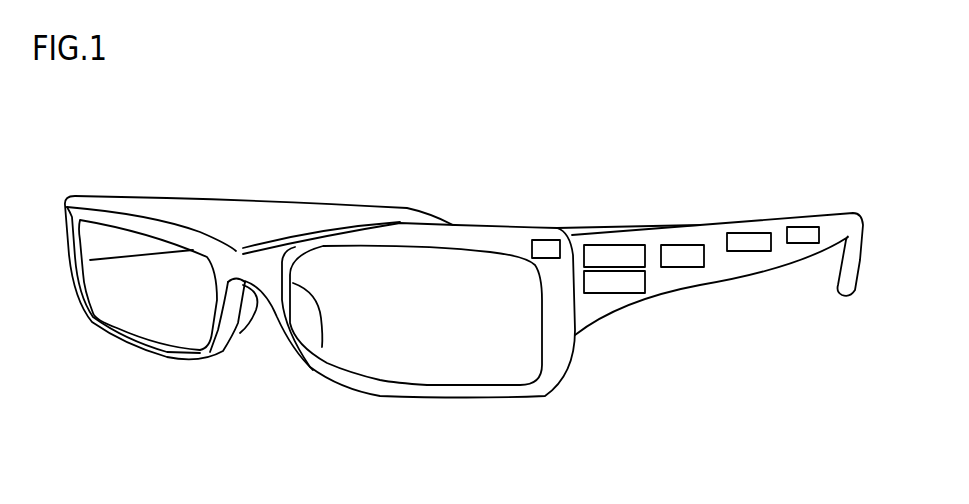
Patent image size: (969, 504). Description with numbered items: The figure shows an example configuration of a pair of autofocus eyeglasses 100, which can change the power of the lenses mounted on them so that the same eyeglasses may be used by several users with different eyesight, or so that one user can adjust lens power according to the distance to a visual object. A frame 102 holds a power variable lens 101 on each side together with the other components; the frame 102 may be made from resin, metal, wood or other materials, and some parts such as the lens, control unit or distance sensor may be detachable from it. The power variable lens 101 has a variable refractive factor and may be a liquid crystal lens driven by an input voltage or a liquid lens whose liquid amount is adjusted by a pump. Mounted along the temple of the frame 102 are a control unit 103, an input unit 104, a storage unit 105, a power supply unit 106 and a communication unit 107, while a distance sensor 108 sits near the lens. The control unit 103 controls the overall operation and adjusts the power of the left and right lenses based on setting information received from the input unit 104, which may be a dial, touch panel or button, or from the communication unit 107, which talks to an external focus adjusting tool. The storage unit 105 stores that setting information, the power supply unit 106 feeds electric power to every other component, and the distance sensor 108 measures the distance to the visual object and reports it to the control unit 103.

The pair of autofocus eyeglasses 100 is at (827, 103).
The power variable lens 101 is at (460, 272).
The frame 102 is at (545, 380).
The control unit 103 is at (609, 253).
The input unit 104 is at (679, 251).
The storage unit 105 is at (745, 239).
The power supply unit 106 is at (805, 236).
The communication unit 107 is at (620, 283).
The distance sensor 108 is at (540, 243).